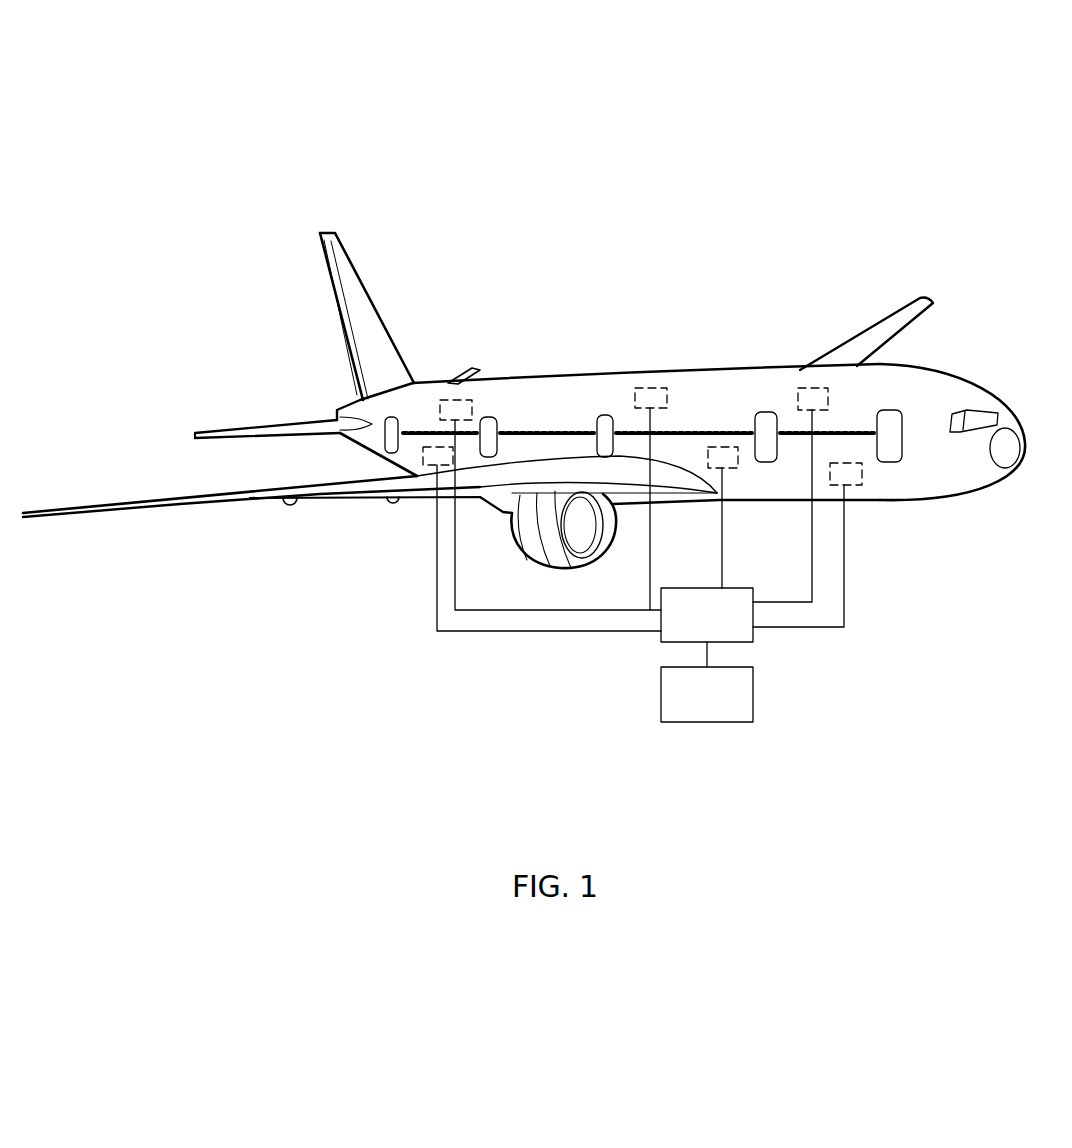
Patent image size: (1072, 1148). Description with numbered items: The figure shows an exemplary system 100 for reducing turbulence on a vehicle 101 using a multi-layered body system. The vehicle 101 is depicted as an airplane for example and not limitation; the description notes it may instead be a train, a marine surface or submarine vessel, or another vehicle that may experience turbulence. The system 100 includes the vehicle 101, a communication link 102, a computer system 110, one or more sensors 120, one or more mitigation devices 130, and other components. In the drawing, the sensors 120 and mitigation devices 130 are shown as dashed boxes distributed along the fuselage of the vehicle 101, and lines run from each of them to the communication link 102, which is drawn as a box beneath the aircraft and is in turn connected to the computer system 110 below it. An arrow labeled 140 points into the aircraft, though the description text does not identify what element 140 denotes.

The system 100 is at (507, 152).
The vehicle 101 is at (979, 376).
The communication link 102 is at (690, 627).
The computer system 110 is at (690, 706).
The sensors 120 is at (649, 388).
The mitigation devices 130 is at (437, 398).
The aircraft interior / cabin 140 is at (957, 486).